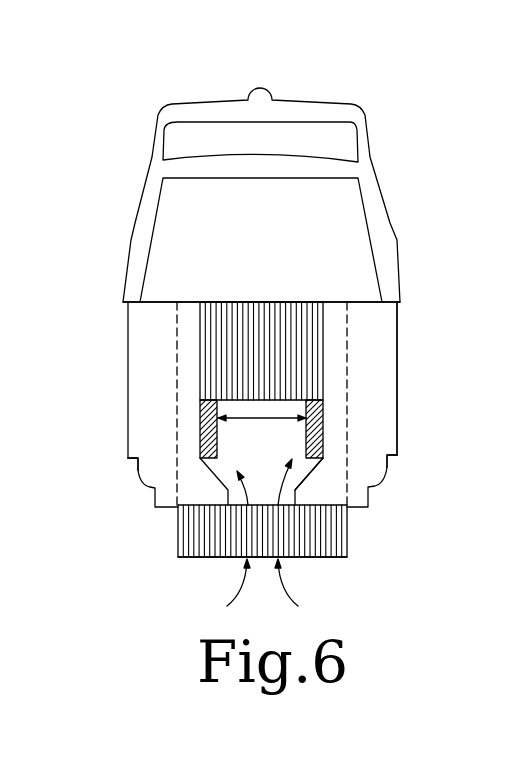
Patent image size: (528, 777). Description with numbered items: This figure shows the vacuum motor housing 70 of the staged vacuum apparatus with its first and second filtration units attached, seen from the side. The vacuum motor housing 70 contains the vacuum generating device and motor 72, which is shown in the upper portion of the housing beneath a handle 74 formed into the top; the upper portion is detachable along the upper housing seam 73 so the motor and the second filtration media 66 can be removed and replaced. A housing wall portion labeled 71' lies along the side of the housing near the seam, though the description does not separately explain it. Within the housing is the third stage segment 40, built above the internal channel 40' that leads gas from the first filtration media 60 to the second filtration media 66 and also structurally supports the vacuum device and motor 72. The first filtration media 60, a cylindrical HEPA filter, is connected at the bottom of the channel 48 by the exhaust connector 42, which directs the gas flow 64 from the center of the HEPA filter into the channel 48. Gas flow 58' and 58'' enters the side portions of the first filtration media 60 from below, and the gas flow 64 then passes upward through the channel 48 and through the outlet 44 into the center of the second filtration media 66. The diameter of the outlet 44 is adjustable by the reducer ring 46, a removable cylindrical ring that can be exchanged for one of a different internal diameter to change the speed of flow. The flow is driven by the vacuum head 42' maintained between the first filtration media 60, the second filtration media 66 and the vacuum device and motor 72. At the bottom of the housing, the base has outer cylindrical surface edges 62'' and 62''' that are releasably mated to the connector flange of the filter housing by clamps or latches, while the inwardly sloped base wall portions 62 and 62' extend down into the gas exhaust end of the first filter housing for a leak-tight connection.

The vacuum motor housing 70 is at (134, 146).
The vacuum generating device and motor 72 is at (340, 213).
The handle 74 is at (315, 135).
The upper housing seam 73 is at (398, 309).
The second filtration media 66 is at (305, 332).
The vacuum head 42' is at (321, 404).
The reducer ring 46 is at (323, 413).
The channel 48 is at (277, 422).
The housing side wall 71' is at (442, 378).
The third stage segment 40 is at (303, 490).
The internal channel 40' is at (382, 458).
The gas flow 64 is at (272, 487).
The outlet 44 is at (387, 466).
The outer cylindrical surface edge 62'' is at (95, 474).
The inwardly sloped base wall portion 62 is at (122, 501).
The outer cylindrical surface edge 62''' is at (435, 469).
The inwardly sloped base wall portion 62' is at (405, 497).
The first filtration media 60 is at (343, 530).
The exhaust connector 42 is at (281, 570).
The gas flow 58'' is at (200, 591).
The gas flow 58' is at (328, 591).